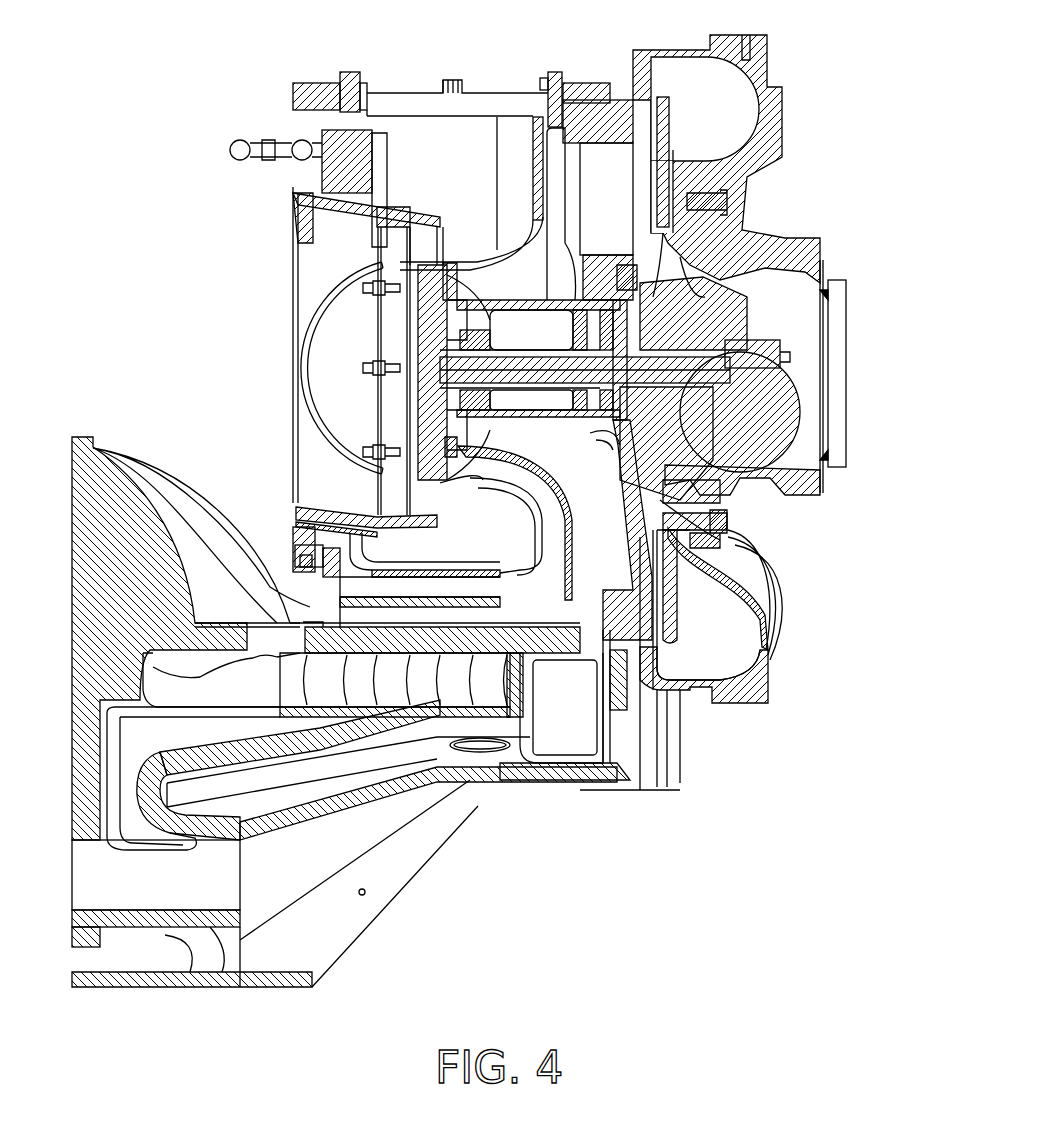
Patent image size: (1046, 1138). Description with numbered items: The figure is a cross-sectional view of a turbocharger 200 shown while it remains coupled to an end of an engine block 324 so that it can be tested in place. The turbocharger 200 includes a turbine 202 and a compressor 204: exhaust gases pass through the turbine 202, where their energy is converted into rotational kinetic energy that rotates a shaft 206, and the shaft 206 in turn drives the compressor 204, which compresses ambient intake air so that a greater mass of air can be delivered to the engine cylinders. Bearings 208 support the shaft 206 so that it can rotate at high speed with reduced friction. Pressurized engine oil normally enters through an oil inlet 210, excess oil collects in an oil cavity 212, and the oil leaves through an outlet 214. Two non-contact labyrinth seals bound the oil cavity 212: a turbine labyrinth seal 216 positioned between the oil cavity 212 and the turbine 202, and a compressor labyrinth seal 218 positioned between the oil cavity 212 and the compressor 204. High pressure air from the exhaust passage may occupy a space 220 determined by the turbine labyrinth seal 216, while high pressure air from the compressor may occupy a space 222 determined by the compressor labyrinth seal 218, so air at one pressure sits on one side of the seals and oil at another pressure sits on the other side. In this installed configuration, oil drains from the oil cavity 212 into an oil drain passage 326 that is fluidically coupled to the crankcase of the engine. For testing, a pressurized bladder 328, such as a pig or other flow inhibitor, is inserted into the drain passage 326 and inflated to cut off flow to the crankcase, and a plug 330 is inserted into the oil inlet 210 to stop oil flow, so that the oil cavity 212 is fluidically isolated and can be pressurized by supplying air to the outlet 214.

The turbocharger 200 is at (311, 50).
The turbine 202 is at (437, 368).
The compressor 204 is at (727, 333).
The shaft 206 is at (760, 362).
The bearings 208 is at (600, 340).
The oil inlet 210 is at (555, 112).
The oil cavity 212 is at (603, 485).
The outlet 214 is at (598, 628).
The turbine labyrinth seal 216 is at (453, 445).
The compressor labyrinth seal 218 is at (593, 433).
The space 220 is at (440, 328).
The space 222 is at (626, 272).
The engine block 324 is at (88, 620).
The oil drain passage 326 is at (577, 742).
The pressurized bladder 328 is at (503, 753).
The plug 330 is at (553, 70).